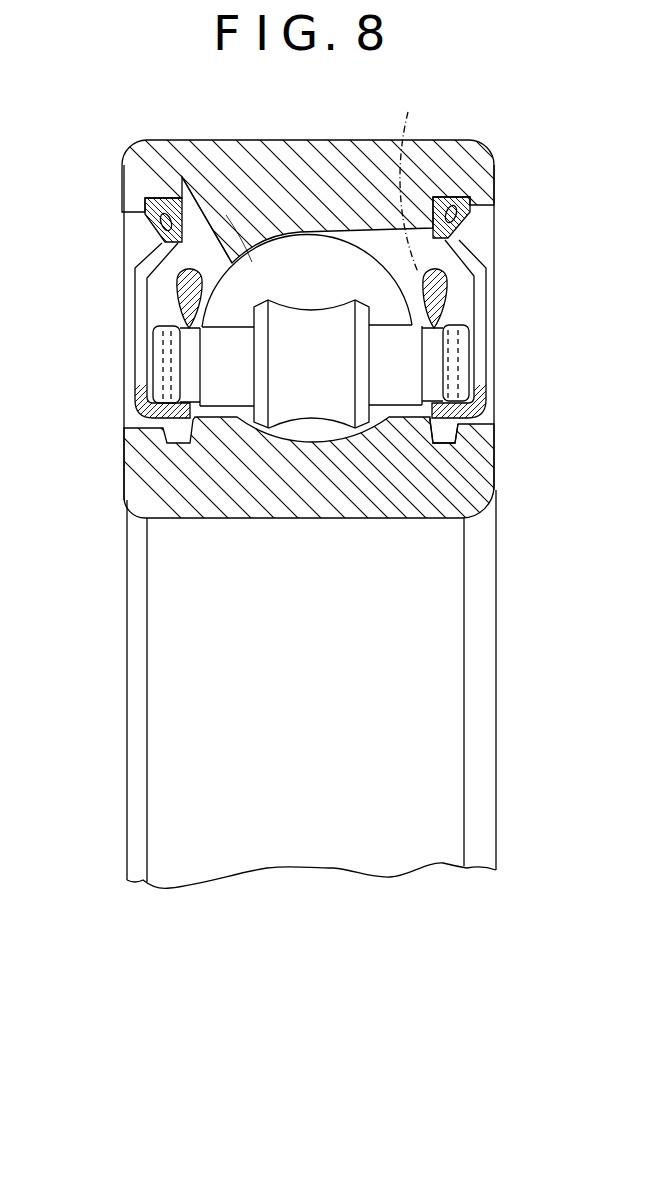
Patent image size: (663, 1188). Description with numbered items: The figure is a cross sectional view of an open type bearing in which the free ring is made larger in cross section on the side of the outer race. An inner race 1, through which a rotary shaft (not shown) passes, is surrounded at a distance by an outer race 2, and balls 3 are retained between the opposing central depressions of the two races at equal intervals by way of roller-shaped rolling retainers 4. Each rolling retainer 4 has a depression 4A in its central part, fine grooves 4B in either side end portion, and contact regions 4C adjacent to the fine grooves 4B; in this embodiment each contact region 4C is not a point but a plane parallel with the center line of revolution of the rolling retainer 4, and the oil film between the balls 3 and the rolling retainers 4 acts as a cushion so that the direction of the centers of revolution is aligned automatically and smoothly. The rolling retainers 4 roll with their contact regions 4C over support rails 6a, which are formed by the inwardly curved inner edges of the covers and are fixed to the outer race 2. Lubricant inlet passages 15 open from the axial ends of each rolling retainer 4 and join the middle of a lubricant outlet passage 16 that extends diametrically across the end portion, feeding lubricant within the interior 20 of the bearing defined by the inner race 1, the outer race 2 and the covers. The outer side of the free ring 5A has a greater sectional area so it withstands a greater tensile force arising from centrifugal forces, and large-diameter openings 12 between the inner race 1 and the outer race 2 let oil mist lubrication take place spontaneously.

The inner race 1 is at (153, 480).
The outer race 2 is at (473, 167).
The ball 3 is at (182, 177).
The rolling retainer 4 is at (328, 325).
The depression 4A is at (312, 313).
The fine groove 4B is at (190, 337).
The contact region 4C is at (162, 353).
The free ring 5A is at (408, 180).
The support rail 6a is at (488, 412).
The large-diameter opening 12 is at (134, 293).
The lubricant inlet passage 15 is at (158, 364).
The lubricant outlet passage 16 is at (160, 326).
The interior of the bearing 20 is at (423, 250).